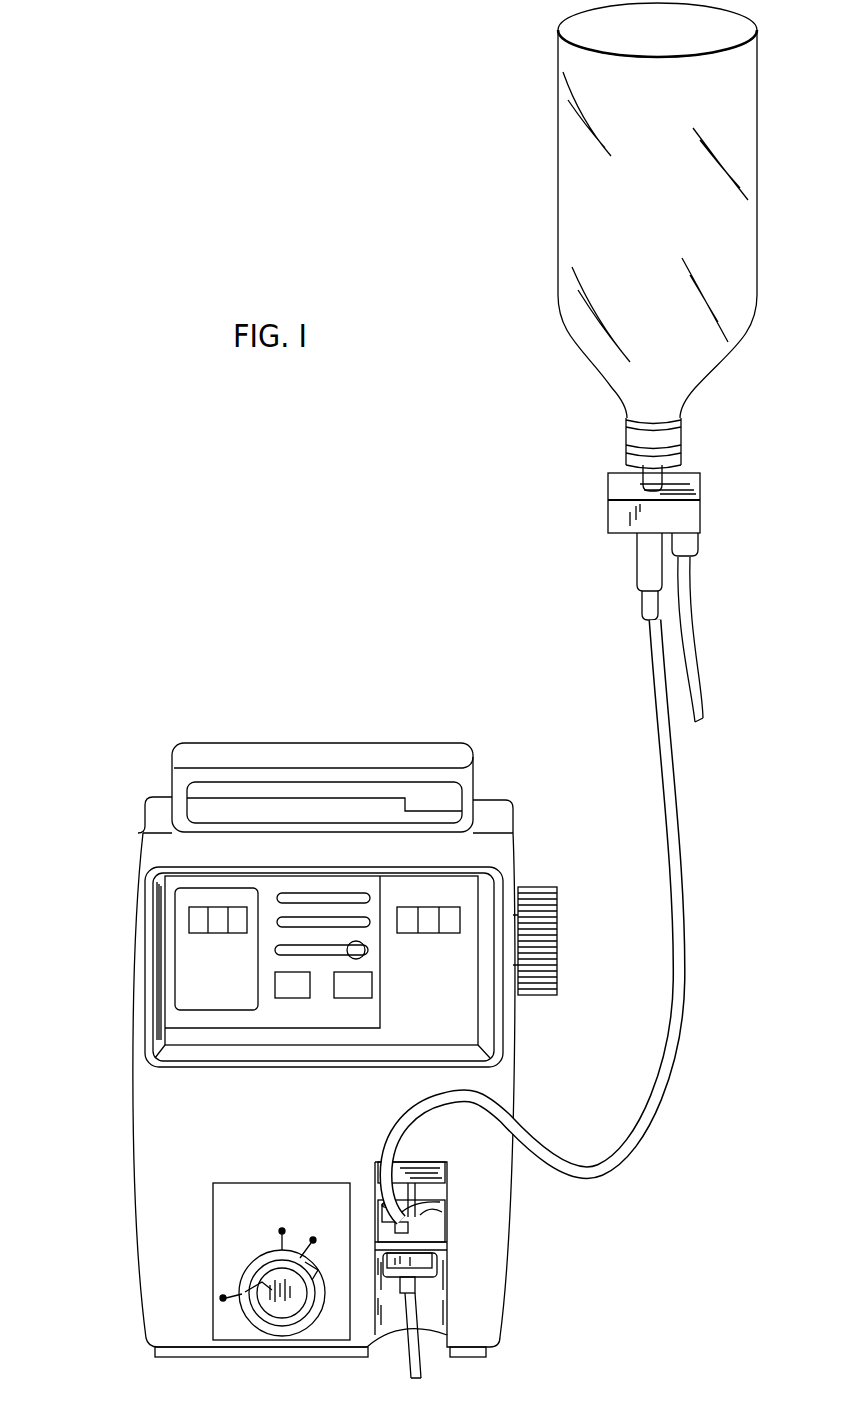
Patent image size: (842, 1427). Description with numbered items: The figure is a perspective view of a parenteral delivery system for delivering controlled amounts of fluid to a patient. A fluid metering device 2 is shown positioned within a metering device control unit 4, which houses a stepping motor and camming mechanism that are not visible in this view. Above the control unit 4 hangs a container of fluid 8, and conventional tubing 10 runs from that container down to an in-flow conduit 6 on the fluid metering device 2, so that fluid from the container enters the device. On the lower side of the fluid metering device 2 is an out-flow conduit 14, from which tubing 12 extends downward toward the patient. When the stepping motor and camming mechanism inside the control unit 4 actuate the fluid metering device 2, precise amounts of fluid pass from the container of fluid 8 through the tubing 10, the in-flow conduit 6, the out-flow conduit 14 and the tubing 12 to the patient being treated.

The fluid metering device 2 is at (438, 1258).
The metering device control unit 4 is at (108, 1053).
The in-flow conduit 6 is at (410, 1232).
The container of fluid 8 is at (757, 228).
The tubing 10 is at (672, 843).
The tubing 12 is at (421, 1367).
The out-flow conduit 14 is at (417, 1287).